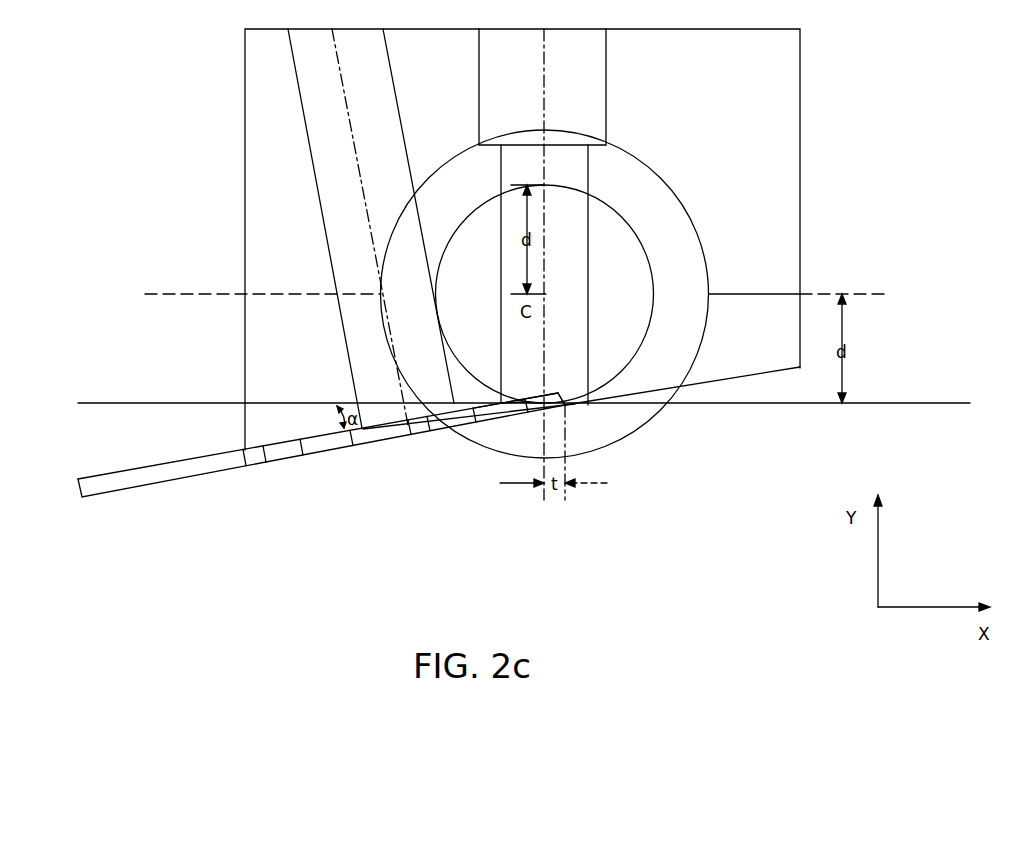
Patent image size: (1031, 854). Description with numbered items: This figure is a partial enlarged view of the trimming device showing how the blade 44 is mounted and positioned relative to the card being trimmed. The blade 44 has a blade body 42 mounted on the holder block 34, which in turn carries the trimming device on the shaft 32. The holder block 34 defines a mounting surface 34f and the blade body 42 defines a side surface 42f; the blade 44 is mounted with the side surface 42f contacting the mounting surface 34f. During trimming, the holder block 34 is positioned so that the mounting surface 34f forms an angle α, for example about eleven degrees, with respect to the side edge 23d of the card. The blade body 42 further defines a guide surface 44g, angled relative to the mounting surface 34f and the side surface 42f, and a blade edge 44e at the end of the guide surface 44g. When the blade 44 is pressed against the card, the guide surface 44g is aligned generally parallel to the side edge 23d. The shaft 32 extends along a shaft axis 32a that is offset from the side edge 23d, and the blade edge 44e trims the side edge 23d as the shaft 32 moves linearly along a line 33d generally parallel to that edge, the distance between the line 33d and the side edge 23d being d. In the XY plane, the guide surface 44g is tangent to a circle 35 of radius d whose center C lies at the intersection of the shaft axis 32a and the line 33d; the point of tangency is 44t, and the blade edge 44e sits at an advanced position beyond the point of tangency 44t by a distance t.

The holder block 34 is at (800, 118).
The mounting surface 34f is at (327, 437).
The shaft 32 is at (667, 184).
The circle 35 is at (627, 220).
The shaft axis 32a is at (540, 294).
The line 33d is at (872, 291).
The side edge 23d is at (122, 400).
The blade body 42 is at (258, 466).
The side surface 42f is at (273, 443).
The blade 44 is at (410, 436).
The guide surface 44g is at (523, 402).
The point of tangency 44t is at (543, 402).
The blade edge 44e is at (566, 403).